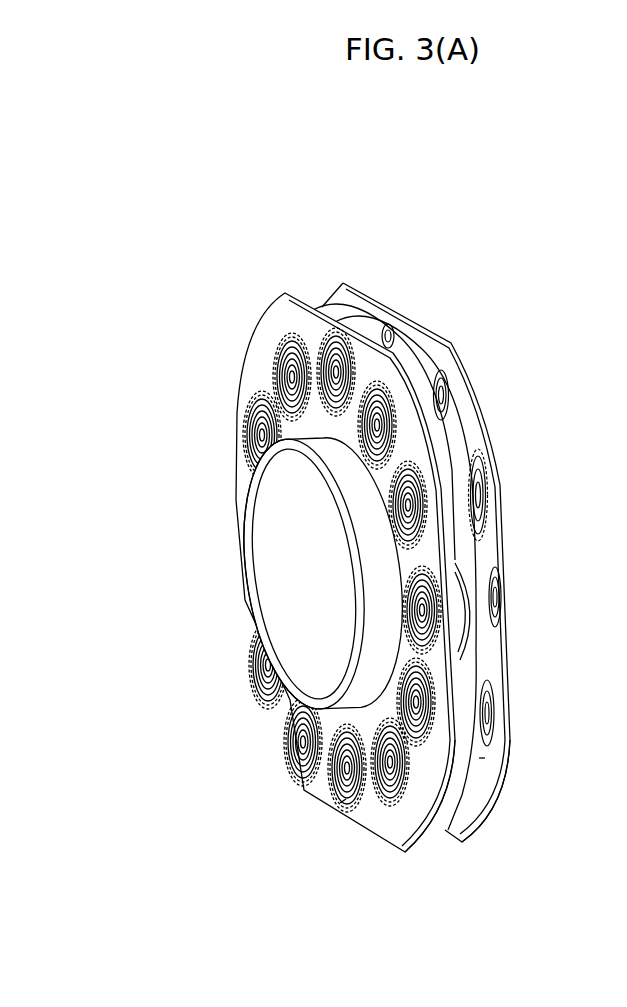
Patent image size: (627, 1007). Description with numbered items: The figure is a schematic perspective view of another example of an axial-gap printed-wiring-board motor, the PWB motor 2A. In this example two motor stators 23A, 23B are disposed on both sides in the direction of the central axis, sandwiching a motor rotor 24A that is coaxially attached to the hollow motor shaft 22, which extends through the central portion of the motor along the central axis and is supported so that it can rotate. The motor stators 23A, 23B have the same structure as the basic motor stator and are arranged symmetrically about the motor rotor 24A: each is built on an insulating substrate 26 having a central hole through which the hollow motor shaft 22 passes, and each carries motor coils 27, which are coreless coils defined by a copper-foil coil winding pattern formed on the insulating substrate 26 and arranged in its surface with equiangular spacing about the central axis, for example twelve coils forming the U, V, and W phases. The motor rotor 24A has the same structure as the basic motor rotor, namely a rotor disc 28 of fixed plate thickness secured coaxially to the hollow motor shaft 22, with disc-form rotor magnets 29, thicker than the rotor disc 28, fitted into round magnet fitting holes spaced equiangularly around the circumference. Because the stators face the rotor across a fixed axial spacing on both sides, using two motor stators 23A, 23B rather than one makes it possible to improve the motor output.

The PWB motor 2A is at (174, 368).
The hollow motor shaft 22 is at (287, 710).
The motor stator 23A is at (298, 284).
The motor stator 23B is at (379, 279).
The motor rotor 24A is at (412, 339).
The insulating substrate 26 is at (393, 860).
The motor coils 27 is at (340, 808).
The rotor disc 28 is at (489, 560).
The rotor magnets 29 is at (475, 637).